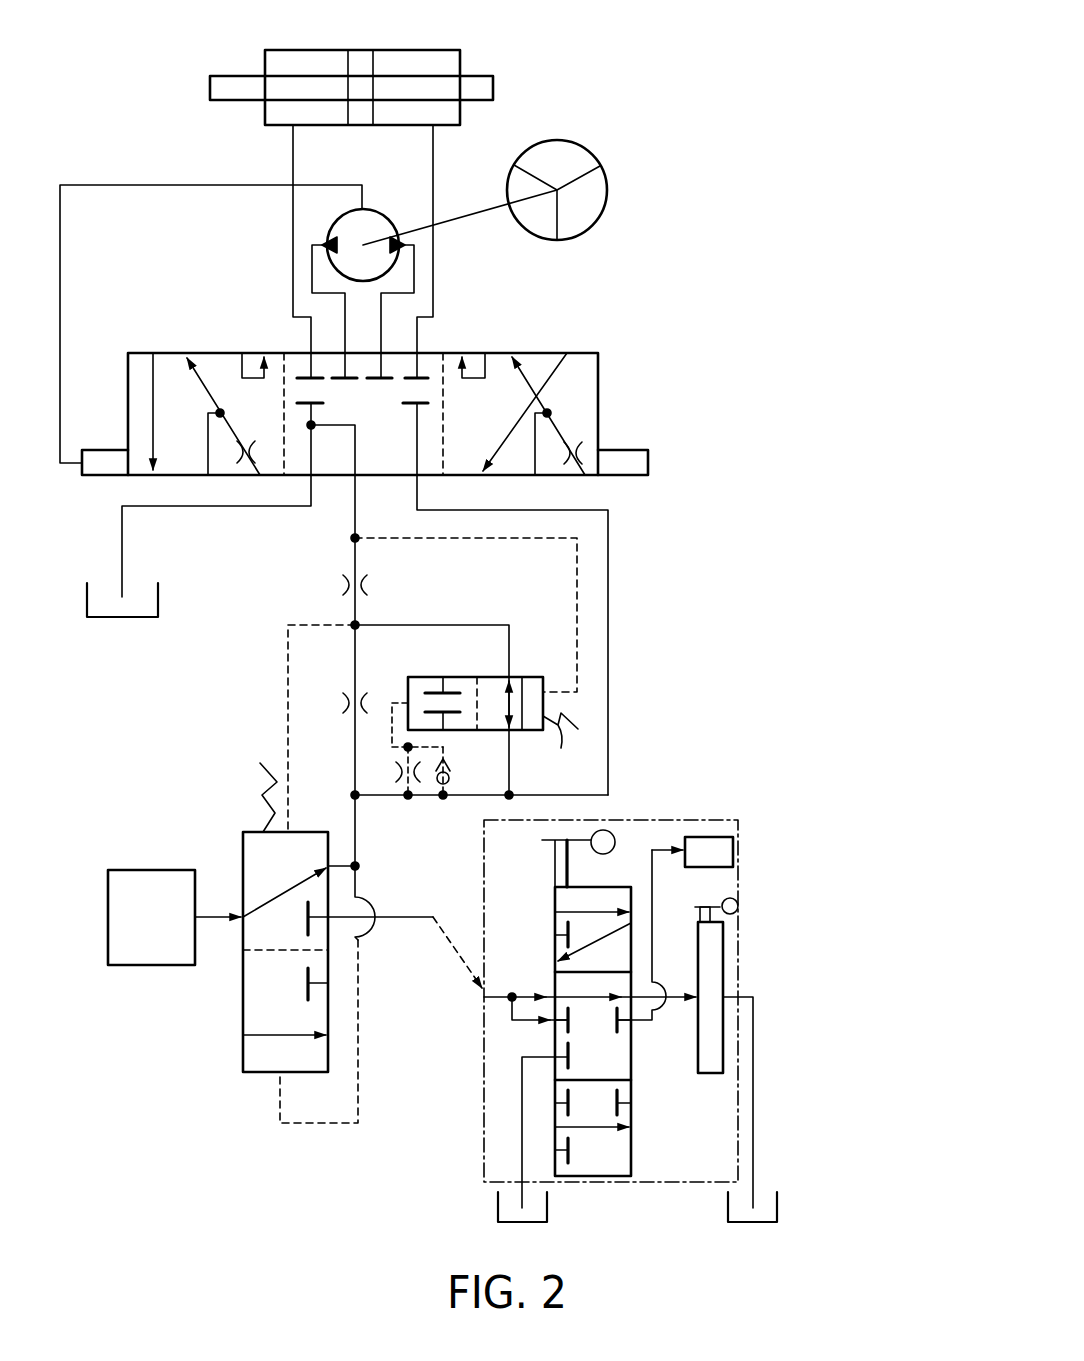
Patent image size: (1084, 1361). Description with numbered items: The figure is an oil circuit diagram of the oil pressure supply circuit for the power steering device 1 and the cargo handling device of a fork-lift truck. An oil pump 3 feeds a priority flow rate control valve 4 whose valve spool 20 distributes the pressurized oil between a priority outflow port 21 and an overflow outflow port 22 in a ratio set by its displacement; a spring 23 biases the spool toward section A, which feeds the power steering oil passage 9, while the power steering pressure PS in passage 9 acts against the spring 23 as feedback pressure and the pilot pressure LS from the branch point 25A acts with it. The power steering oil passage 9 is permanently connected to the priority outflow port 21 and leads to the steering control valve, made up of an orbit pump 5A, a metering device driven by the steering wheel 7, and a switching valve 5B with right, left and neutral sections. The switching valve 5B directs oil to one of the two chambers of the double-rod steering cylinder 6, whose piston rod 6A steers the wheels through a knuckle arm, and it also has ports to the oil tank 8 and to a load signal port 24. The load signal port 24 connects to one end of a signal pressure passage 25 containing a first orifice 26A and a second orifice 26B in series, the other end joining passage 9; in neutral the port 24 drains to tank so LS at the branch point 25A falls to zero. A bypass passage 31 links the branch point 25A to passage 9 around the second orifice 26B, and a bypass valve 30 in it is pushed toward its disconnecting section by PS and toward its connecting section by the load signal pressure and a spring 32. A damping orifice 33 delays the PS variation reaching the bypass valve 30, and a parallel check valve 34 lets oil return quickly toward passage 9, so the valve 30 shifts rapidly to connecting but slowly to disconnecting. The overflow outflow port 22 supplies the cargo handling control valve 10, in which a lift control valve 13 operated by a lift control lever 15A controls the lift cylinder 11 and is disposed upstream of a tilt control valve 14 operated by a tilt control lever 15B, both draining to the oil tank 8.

The power steering device 1 is at (188, 163).
The oil pump 3 is at (148, 870).
The priority flow rate control valve 4 is at (209, 829).
The orbit pump 5A is at (378, 216).
The switching valve 5B is at (585, 350).
The steering cylinder 6 is at (423, 60).
The piston rod 6A is at (489, 78).
The steering wheel 7 is at (568, 151).
The oil tank 8 is at (160, 595).
The power steering oil passage 9 is at (608, 540).
The cargo handling control valve 10 is at (686, 813).
The lift cylinder 11 is at (735, 850).
The lift control valve 13 is at (549, 933).
The tilt control valve 14 is at (727, 964).
The lift control lever 15A is at (608, 835).
The tilt control lever 15B is at (738, 905).
The valve spool 20 is at (243, 1006).
The priority outflow port 21 is at (340, 866).
The overflow outflow port 22 is at (333, 920).
The spring 23 is at (258, 795).
The load signal port 24 is at (353, 482).
The signal pressure passage 25 is at (354, 745).
The branch point 25A is at (352, 623).
The first orifice 26A is at (342, 584).
The second orifice 26B is at (342, 701).
The bypass valve 30 is at (533, 666).
The bypass passage 31 is at (437, 625).
The spring 32 is at (562, 746).
The damping orifice 33 is at (401, 786).
The check valve 34 is at (447, 786).